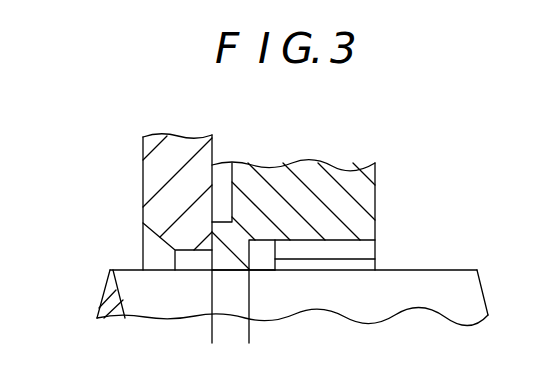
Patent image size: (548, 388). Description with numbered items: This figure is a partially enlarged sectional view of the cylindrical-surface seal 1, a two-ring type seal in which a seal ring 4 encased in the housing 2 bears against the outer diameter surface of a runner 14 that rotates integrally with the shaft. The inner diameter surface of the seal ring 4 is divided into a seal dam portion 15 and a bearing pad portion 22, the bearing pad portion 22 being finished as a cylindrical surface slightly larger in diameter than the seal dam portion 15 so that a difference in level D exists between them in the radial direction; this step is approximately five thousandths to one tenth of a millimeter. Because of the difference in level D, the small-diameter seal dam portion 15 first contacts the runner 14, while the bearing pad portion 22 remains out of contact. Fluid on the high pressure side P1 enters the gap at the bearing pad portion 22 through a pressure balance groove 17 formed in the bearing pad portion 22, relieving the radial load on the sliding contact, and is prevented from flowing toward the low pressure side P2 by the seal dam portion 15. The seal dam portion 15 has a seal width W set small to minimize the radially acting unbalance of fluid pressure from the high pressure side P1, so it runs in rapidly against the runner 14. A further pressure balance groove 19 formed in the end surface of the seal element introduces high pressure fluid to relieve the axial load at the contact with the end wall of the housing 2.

The cylindrical-surface seal 1 is at (376, 179).
The housing 2 is at (151, 182).
The seal ring 4 is at (303, 177).
The runner 14 is at (135, 298).
The seal dam portion 15 is at (231, 272).
The pressure balance groove 17 is at (265, 241).
The pressure balance groove 19 is at (230, 193).
The bearing pad portion 22 is at (347, 260).
The seal width W is at (249, 332).
The difference in level D is at (392, 261).
The high pressure side P1 is at (380, 258).
The low pressure side P2 is at (98, 229).